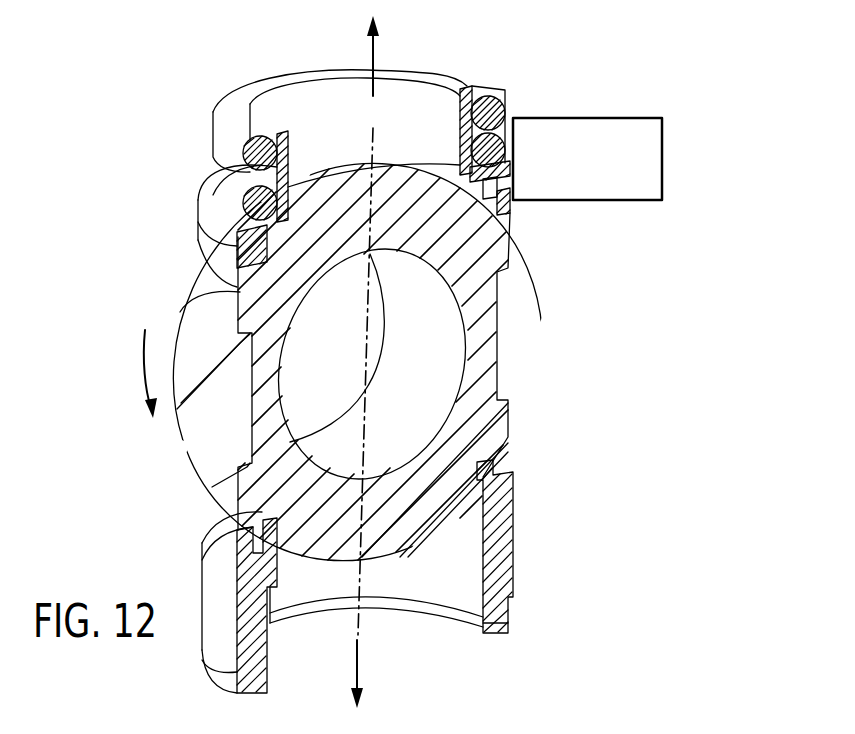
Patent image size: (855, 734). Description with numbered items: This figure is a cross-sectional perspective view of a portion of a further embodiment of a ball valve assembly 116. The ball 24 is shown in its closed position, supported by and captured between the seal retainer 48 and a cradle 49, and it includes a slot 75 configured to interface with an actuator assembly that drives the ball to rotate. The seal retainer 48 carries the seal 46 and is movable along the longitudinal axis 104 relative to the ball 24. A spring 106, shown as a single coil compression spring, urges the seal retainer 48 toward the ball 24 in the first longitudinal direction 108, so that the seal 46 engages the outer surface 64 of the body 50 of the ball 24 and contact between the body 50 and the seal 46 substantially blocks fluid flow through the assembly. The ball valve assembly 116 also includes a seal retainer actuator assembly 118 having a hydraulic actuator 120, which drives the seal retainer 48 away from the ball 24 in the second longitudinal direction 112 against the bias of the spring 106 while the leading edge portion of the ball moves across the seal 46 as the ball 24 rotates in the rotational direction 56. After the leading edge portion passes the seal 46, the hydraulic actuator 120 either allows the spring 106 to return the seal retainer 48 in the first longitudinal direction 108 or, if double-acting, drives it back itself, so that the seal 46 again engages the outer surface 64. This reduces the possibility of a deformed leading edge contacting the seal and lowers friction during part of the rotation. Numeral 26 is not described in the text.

The ball 24 is at (268, 512).
The ball 26 is at (447, 333).
The seal 46 is at (483, 197).
The seal retainer 48 is at (212, 192).
The cradle 49 is at (493, 557).
The body 50 is at (485, 422).
The rotational direction 56 is at (143, 365).
The outer surface 64 is at (192, 277).
The slot 75 is at (190, 438).
The longitudinal axis 104 is at (372, 150).
The spring 106 is at (235, 113).
The first longitudinal direction 108 is at (360, 645).
The second longitudinal direction 112 is at (376, 62).
The ball valve assembly 116 is at (85, 344).
The seal retainer actuator assembly 118 is at (560, 52).
The hydraulic actuator 120 is at (641, 118).